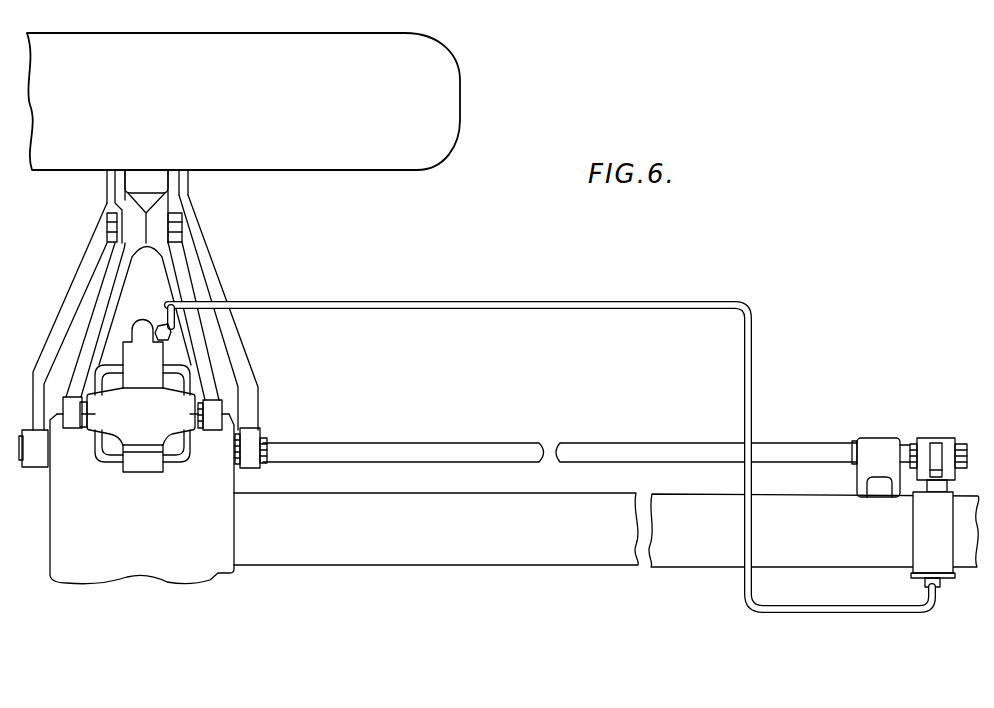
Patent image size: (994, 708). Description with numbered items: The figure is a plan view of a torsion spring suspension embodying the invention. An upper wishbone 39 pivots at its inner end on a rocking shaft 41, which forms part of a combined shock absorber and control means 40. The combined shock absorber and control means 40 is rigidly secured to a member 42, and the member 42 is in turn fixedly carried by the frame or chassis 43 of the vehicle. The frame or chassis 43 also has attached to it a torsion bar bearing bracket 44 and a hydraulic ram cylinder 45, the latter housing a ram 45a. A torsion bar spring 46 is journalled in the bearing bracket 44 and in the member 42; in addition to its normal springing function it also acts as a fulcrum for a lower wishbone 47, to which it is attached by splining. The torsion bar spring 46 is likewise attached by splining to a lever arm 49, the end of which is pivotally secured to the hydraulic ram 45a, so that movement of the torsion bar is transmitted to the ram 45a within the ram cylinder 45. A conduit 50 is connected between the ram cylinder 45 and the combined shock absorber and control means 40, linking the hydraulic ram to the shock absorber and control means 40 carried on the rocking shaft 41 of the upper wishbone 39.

The upper wishbone 39 is at (73, 417).
The combined shock absorber and control means 40 is at (142, 457).
The rocking shaft 41 is at (83, 430).
The member 42 is at (210, 548).
The frame or chassis 43 is at (307, 540).
The torsion bar bearing bracket 44 is at (863, 488).
The hydraulic ram cylinder 45 is at (932, 553).
The ram 45a is at (933, 487).
The torsion bar spring 46 is at (430, 448).
The lower wishbone 47 is at (37, 457).
The lever arm 49 is at (935, 450).
The conduit 50 is at (742, 588).